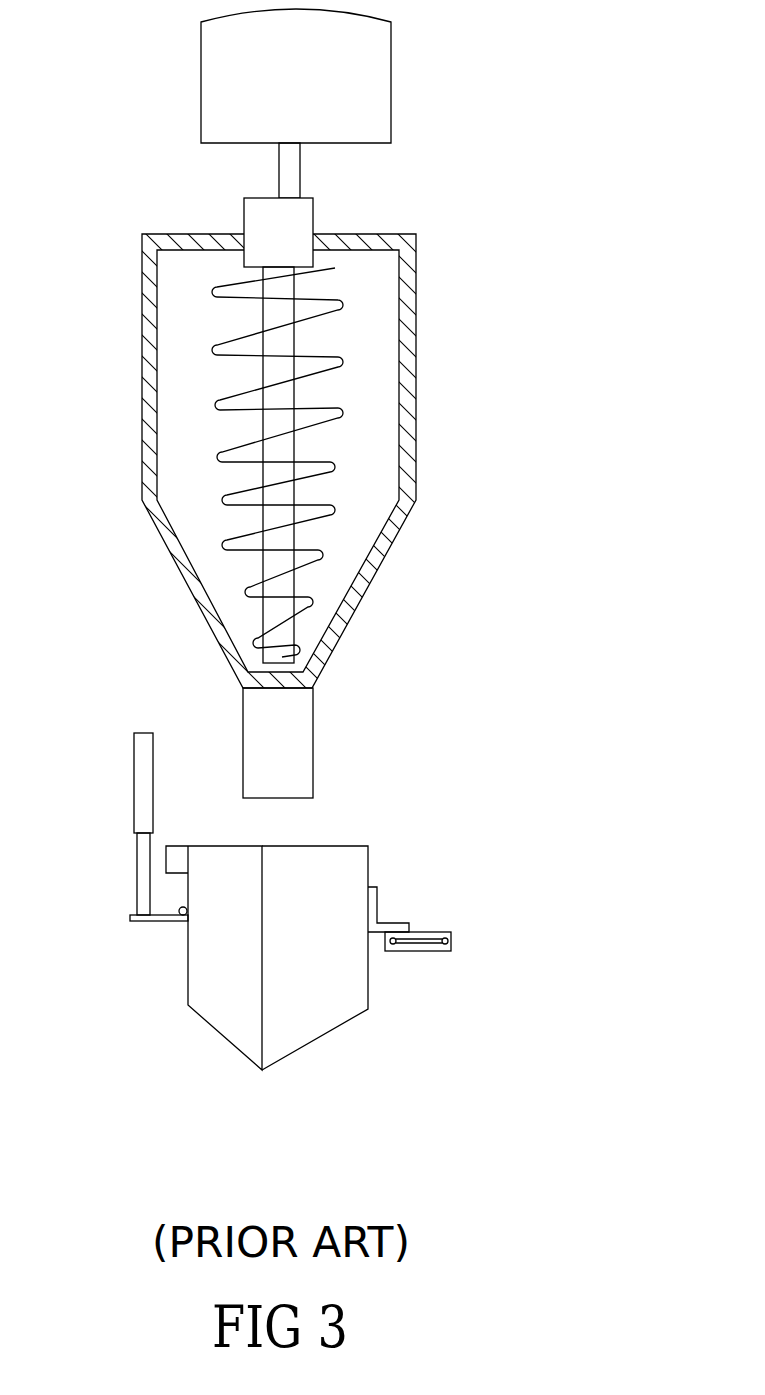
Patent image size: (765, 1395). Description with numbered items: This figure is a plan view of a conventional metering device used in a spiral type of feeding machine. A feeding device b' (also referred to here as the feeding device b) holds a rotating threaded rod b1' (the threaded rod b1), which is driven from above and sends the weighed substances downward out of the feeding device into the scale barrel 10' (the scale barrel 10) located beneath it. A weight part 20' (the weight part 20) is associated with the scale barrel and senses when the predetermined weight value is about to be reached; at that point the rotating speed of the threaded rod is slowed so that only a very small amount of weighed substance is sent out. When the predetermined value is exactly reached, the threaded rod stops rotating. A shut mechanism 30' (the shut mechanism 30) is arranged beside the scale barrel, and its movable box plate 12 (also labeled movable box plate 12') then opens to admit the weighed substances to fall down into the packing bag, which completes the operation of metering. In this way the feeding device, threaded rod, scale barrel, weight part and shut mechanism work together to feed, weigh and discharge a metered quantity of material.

The feeding device b' is at (382, 480).
The rotating threaded rod b1' is at (397, 441).
The scale barrel 10' is at (241, 895).
The movable box plate 12' is at (157, 958).
The weight part 20' is at (496, 987).
The shut mechanism 30' is at (145, 733).
The hopper b is at (382, 480).
The spiral feeding screw b1 is at (397, 441).
The container cup 10 is at (241, 895).
The movable box plate 12 is at (157, 958).
The slotted fixing block 20 is at (496, 987).
The pushing cylinder 30 is at (145, 733).